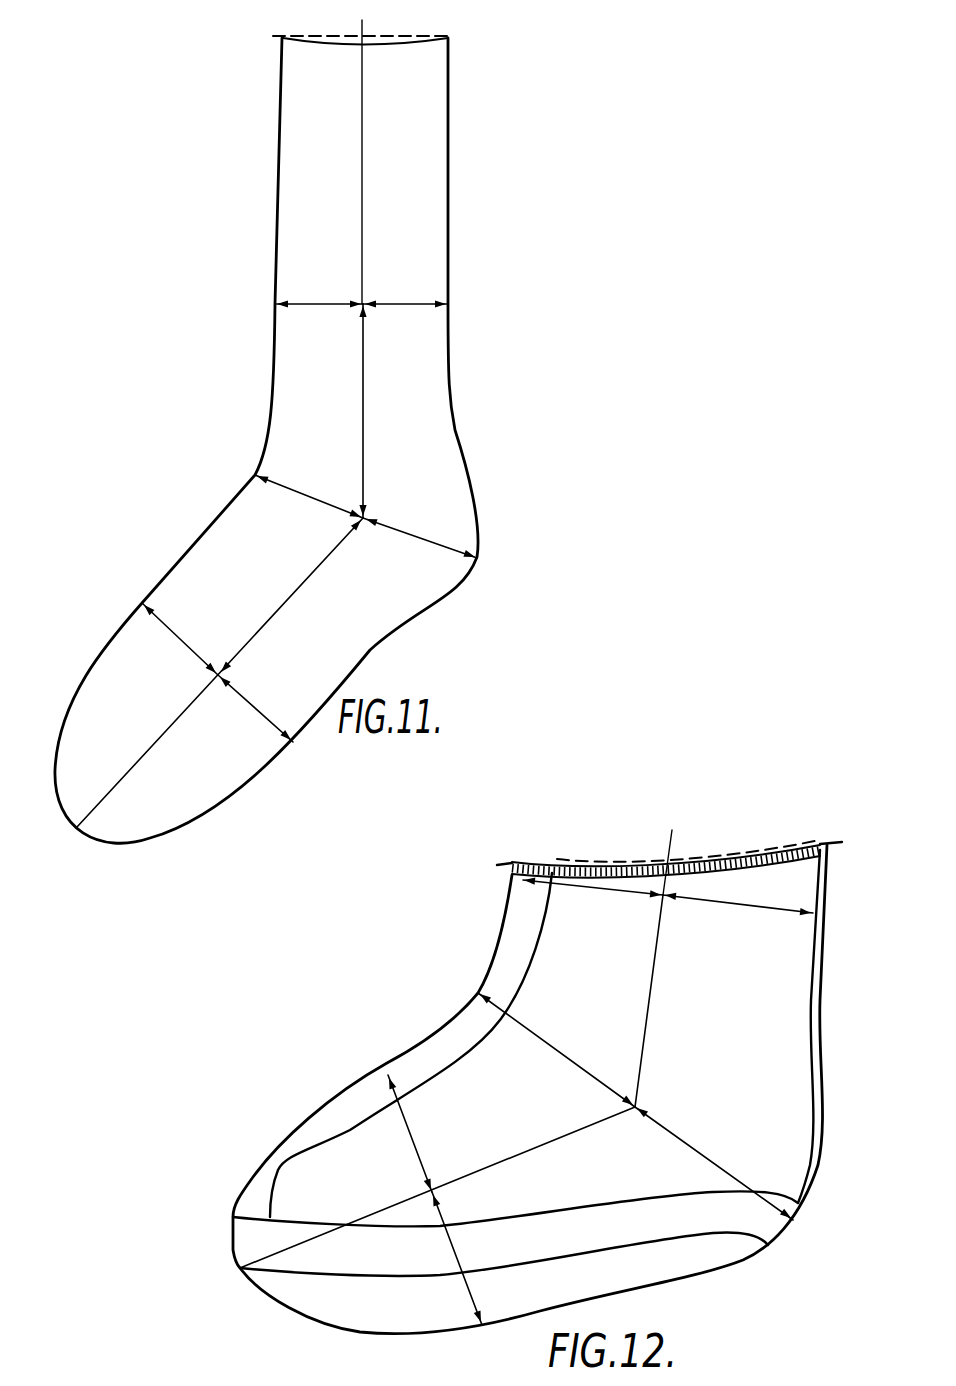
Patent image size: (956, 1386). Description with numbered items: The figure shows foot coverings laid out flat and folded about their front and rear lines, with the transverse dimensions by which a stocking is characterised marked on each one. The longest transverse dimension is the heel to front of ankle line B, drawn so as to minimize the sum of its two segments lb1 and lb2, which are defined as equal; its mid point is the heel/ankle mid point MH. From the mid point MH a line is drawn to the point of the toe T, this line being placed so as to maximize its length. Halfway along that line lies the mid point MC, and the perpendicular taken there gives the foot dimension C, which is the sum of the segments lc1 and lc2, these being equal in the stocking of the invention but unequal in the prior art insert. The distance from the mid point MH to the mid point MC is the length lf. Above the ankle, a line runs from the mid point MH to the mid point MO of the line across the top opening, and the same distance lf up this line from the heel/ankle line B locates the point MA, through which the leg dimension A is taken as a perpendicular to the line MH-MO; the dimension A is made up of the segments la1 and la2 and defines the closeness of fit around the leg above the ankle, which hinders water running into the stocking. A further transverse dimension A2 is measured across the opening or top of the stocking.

In FIG. 11, the mid point of the top opening line MO is at (360, 38).
In FIG. 12, the mid point of the top opening line MO is at (670, 855).
In FIG. 11, the transverse dimension across the top opening A2 is at (412, 39).
In FIG. 12, the transverse dimension across the top opening A2 is at (738, 843).
In FIG. 11, the mid point of the leg-width line A MA is at (364, 303).
In FIG. 12, the mid point of the leg-width line A MA is at (663, 896).
In FIG. 11, the first segment of dimension A la1 is at (319, 293).
In FIG. 12, the first segment of dimension A la1 is at (593, 897).
In FIG. 11, the second segment of dimension A la2 is at (405, 293).
In FIG. 12, the second segment of dimension A la2 is at (738, 913).
In FIG. 11, the transverse leg dimension A is at (428, 310).
In FIG. 12, the transverse leg dimension A is at (580, 887).
In FIG. 11, the distance from MH to MC lf is at (233, 565).
In FIG. 12, the distance from MH to MC lf is at (458, 1081).
In FIG. 11, the first segment of dimension B lb1 is at (309, 493).
In FIG. 12, the first segment of dimension B lb1 is at (556, 1049).
In FIG. 11, the second segment of dimension B lb2 is at (420, 535).
In FIG. 12, the second segment of dimension B lb2 is at (714, 1163).
In FIG. 11, the mid point of the heel/ankle line MH is at (365, 516).
In FIG. 12, the mid point of the heel/ankle line MH is at (637, 1105).
In FIG. 11, the heel to front of ankle dimension B is at (318, 507).
In FIG. 12, the heel to front of ankle dimension B is at (535, 1024).
In FIG. 11, the first segment of dimension C lc1 is at (180, 638).
In FIG. 12, the first segment of dimension C lc1 is at (420, 1133).
In FIG. 11, the second segment of dimension C lc2 is at (256, 708).
In FIG. 12, the second segment of dimension C lc2 is at (463, 1258).
In FIG. 11, the mid point of the heel-to-toe line MC is at (218, 680).
In FIG. 12, the mid point of the heel-to-toe line MC is at (436, 1192).
In FIG. 11, the transverse foot dimension C is at (182, 659).
In FIG. 12, the transverse foot dimension C is at (392, 1109).
In FIG. 11, the point of the toe T is at (68, 836).
In FIG. 12, the point of the toe T is at (240, 1270).